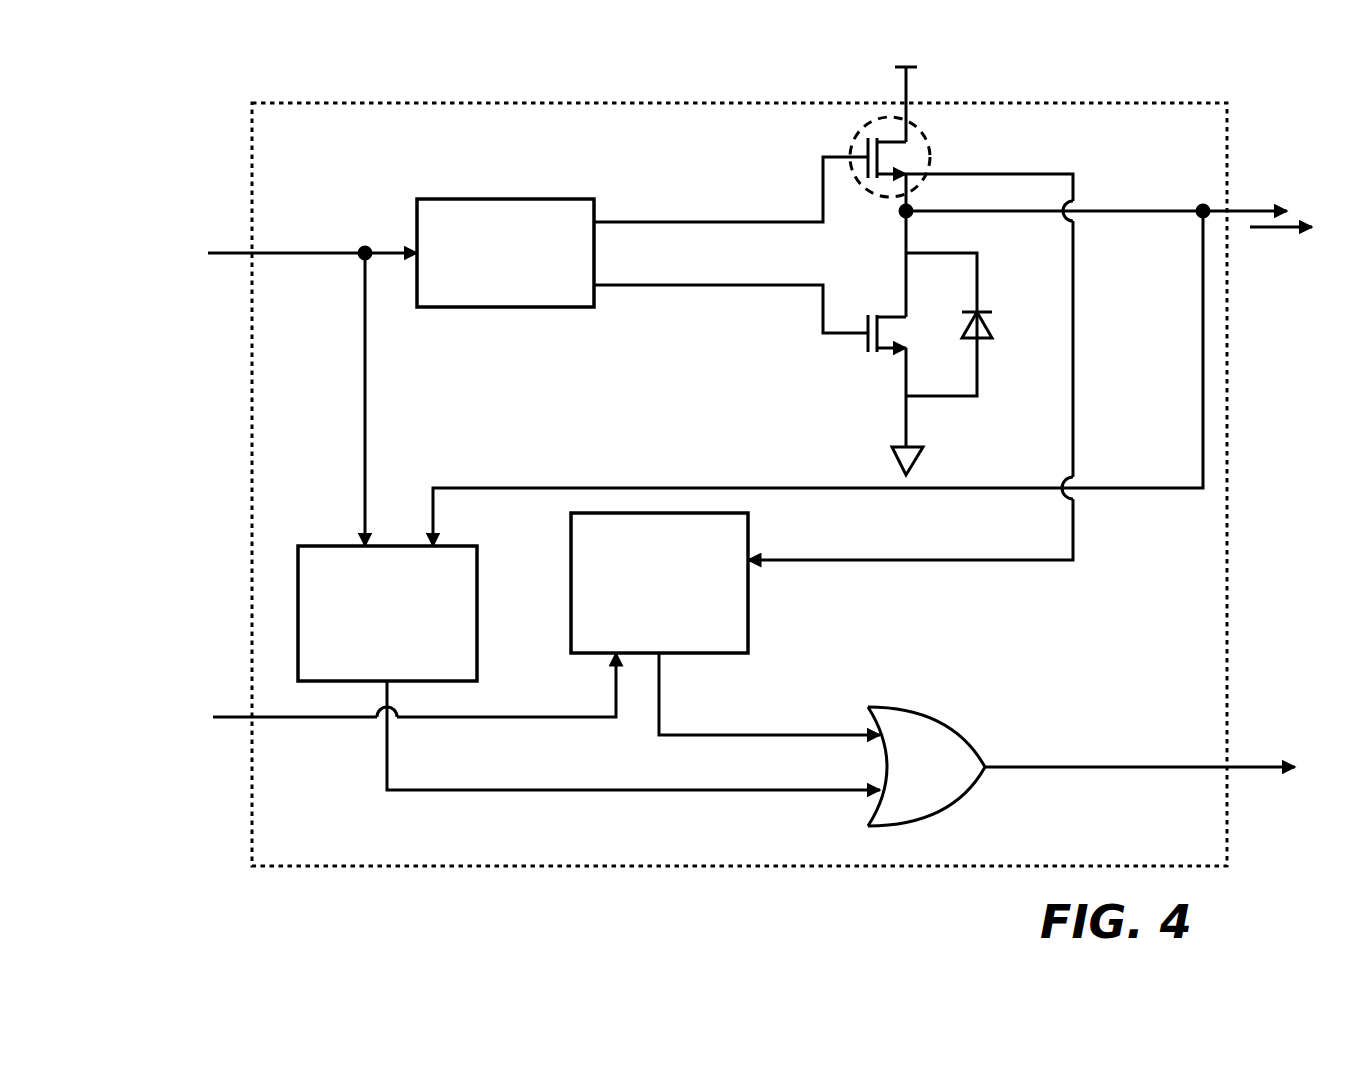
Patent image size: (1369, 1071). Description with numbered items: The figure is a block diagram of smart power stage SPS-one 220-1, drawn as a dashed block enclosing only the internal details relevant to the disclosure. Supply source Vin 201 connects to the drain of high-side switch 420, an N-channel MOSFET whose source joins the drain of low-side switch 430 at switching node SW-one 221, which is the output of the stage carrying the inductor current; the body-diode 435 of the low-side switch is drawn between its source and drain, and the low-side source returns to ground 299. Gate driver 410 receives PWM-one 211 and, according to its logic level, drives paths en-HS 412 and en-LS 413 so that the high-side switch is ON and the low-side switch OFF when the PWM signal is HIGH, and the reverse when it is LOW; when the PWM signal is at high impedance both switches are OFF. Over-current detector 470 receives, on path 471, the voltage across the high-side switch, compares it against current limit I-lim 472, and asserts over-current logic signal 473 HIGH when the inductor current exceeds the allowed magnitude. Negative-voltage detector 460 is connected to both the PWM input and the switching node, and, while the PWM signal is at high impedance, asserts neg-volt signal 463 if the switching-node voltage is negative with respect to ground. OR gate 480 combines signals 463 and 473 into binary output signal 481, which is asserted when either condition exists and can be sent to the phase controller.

The smart power stage SPS-1 220-1 is at (436, 90).
The Vin 201 is at (906, 67).
The PWM-1 211 is at (232, 253).
The gate driver 410 is at (505, 253).
The path en-HS 412 is at (735, 222).
The path en-LS 413 is at (688, 285).
The high-side switch 420 is at (930, 168).
The low-side switch 430 is at (912, 337).
The body-diode 435 is at (985, 334).
The ground 299 is at (905, 447).
The switching node SW-1 221 is at (1243, 211).
The negative-voltage detector 460 is at (387, 613).
The over-current detector 470 is at (659, 583).
The path for high-side switch voltage 471 is at (828, 560).
The I-lim 472 is at (232, 717).
The over-current logic signal 473 is at (781, 735).
The neg-volt logic signal 463 is at (600, 793).
The OR gate 480 is at (970, 742).
The binary output signal 481 is at (1235, 767).